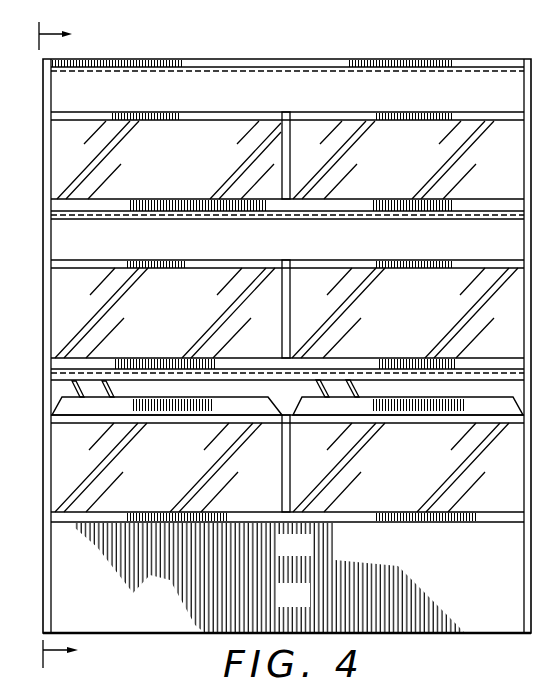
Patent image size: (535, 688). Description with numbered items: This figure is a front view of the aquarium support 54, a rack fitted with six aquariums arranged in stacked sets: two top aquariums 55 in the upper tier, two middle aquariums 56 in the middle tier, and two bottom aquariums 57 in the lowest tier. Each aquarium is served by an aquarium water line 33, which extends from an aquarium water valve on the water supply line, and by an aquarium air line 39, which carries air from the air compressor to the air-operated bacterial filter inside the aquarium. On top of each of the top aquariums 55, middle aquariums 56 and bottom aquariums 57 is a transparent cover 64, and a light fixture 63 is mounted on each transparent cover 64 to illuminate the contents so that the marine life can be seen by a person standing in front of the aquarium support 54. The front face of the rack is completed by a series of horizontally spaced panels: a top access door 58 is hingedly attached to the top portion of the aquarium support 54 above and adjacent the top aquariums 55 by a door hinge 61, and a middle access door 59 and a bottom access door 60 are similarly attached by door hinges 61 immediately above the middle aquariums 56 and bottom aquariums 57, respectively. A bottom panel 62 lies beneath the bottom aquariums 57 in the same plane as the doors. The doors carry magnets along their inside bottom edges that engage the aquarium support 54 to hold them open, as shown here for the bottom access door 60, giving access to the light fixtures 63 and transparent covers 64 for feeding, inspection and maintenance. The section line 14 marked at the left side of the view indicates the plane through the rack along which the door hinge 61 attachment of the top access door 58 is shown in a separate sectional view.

The section line 14- 14 is at (45, 347).
The aquarium water line 33 is at (327, 380).
The aquarium air line 39 is at (354, 382).
The aquarium support 54 is at (448, 42).
The top aquariums 55 is at (248, 128).
The middle aquariums 56 is at (366, 283).
The bottom aquariums 57 is at (363, 500).
The top access door 58 is at (436, 102).
The middle access door 59 is at (438, 248).
The bottom access door 60 is at (221, 379).
The door hinge 61 is at (183, 70).
The bottom panel 62 is at (307, 604).
The light fixture 63 is at (243, 406).
The transparent cover 64 is at (181, 121).